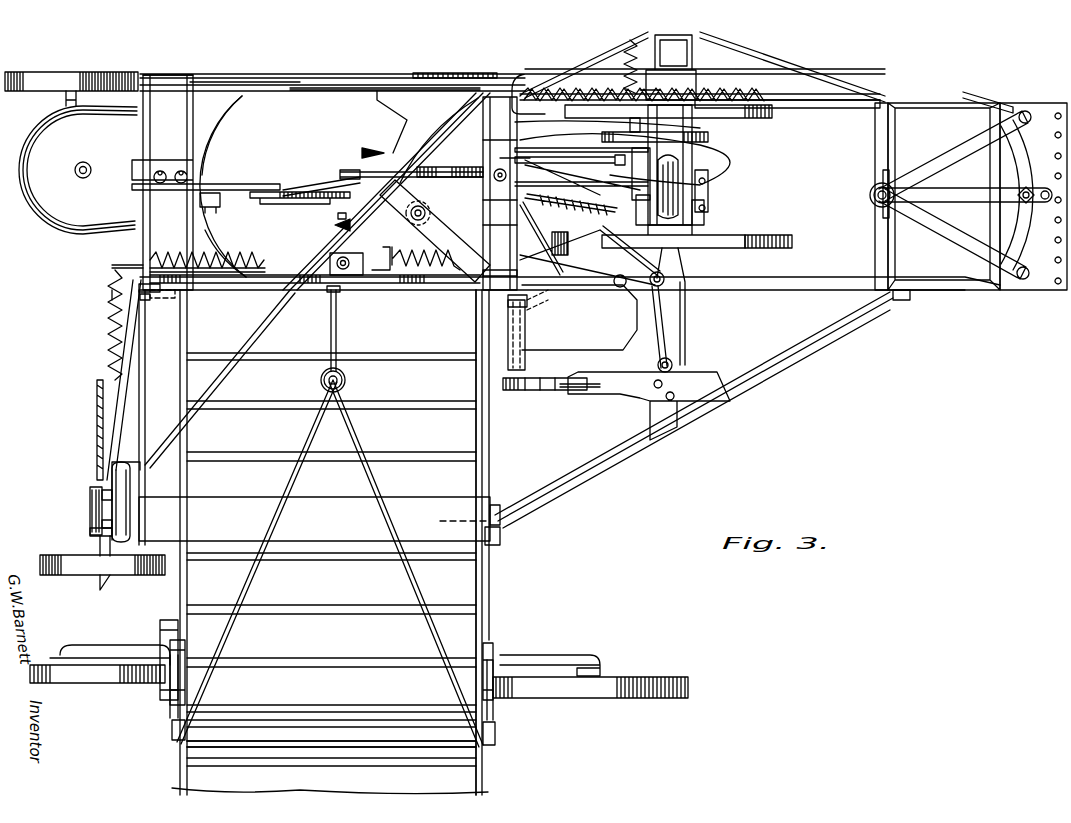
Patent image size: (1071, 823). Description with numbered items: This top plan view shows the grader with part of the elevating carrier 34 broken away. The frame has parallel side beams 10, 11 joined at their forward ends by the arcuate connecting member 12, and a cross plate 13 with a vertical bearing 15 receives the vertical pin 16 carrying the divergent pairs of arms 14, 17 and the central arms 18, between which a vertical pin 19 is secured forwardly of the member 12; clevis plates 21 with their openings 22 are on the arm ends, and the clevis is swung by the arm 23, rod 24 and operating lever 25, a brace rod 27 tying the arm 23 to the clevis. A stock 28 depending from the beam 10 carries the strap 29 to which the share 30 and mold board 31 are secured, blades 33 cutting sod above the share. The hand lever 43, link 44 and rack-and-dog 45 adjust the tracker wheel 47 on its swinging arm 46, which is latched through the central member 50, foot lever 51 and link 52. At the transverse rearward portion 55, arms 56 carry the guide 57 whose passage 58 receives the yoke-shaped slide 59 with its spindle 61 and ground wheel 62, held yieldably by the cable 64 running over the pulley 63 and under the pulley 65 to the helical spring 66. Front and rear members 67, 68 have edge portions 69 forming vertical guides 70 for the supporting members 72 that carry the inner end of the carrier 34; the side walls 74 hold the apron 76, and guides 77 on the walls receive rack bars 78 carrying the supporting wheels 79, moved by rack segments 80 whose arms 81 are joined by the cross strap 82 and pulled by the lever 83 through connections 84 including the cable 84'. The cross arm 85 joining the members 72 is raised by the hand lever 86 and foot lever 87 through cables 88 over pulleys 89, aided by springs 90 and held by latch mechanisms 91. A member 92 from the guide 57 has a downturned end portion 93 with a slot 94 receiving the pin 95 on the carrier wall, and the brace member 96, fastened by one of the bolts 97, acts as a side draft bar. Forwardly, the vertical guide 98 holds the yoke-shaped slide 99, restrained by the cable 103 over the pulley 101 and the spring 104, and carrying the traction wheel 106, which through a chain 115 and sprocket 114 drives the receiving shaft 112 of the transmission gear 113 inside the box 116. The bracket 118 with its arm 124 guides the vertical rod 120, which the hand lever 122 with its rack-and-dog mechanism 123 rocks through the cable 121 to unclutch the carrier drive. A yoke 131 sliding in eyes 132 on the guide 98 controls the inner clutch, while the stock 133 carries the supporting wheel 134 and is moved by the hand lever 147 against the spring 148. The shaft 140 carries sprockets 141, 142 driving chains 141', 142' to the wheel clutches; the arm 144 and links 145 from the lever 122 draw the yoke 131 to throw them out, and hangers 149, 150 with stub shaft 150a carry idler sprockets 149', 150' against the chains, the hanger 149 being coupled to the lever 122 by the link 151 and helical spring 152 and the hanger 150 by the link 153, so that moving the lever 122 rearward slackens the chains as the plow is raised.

The side beam 10 is at (345, 74).
The side beam 11 is at (618, 280).
The arcuate connecting member 12 is at (1005, 222).
The cross plate 13 is at (888, 232).
The forwardly extending arms 14 is at (950, 232).
The vertical bearing 15 is at (883, 212).
The vertical pin 16 is at (870, 192).
The forwardly extending arms 17 is at (945, 152).
The central pair of arms 18 is at (965, 188).
The vertical pin 19 is at (1020, 192).
The clevis plates 21 is at (1020, 290).
The openings 22 is at (1058, 110).
The arm 23 is at (876, 130).
The rearwardly-extending rod 24 is at (795, 78).
The operating lever 25 is at (453, 73).
The brace rod 27 is at (990, 86).
The stock 28 is at (240, 80).
The strap 29 is at (280, 84).
The share 30 is at (438, 130).
The mold board 31 is at (246, 212).
The blades 33 is at (362, 152).
The elevating carrier 34 is at (483, 475).
The hand lever 43 is at (233, 190).
The link 44 is at (173, 191).
The rack-and-dog 45 is at (230, 180).
The arm 46 is at (66, 102).
The tracker wheel 47 is at (86, 72).
The central member 50 is at (290, 190).
The foot lever 51 is at (214, 207).
The link 52 is at (162, 182).
The transverse rearward portion 55 is at (78, 234).
The spaced arms 56 is at (120, 388).
The guide 57 is at (112, 462).
The passage 58 is at (118, 576).
The yoke-shaped slide 59 is at (112, 478).
The horizontal spindle 61 is at (100, 548).
The ground wheel 62 is at (72, 576).
The vertical pulley 63 is at (102, 496).
The cable 64 is at (90, 512).
The pulley 65 is at (90, 532).
The helical spring 66 is at (108, 312).
The front member 67 is at (500, 136).
The rear member 68 is at (168, 112).
The edge portions 69 is at (168, 300).
The vertical guides 70 is at (110, 290).
The vertical supporting members 72 is at (112, 266).
The side walls 74 is at (180, 596).
The apron 76 is at (330, 573).
The vertical guides 77 is at (160, 636).
The rack bars 78 is at (180, 652).
The supporting wheels 79 is at (124, 683).
The rack segments 80 is at (185, 677).
The upwardly extending arms 81 is at (170, 712).
The cross strap 82 is at (290, 738).
The lever 83 is at (300, 204).
The connections 84 is at (330, 563).
The cable 84' is at (352, 328).
The cross arm 85 is at (213, 300).
The hand lever 86 is at (240, 268).
The foot lever 87 is at (416, 255).
The cables 88 is at (330, 275).
The pulleys 89 is at (333, 305).
The springs 90 is at (150, 262).
The latch mechanism 91 is at (250, 300).
The member 92 is at (314, 519).
The forward end portion 93 is at (495, 546).
The longitudinal slot 94 is at (453, 522).
The pin 95 is at (506, 530).
The brace member 96 is at (590, 480).
The bolts 97 is at (900, 302).
The vertical guide 98 is at (704, 215).
The yoke-shaped slide 99 is at (702, 192).
The pulley 101 is at (642, 166).
The cable 103 is at (640, 192).
The spring 104 is at (630, 58).
The traction wheel 106 is at (778, 235).
The receiving shaft 112 is at (512, 390).
The transmission gear 113 is at (548, 300).
The sprocket 114 is at (540, 390).
The chain 115 is at (560, 390).
The box 116 is at (579, 317).
The bracket 118 is at (676, 320).
The vertical rod 120 is at (674, 360).
The cable 121 is at (500, 223).
The hand lever 122 is at (360, 172).
The rack-and-dog mechanism 123 is at (440, 164).
The arm 124 is at (590, 394).
The yoke 131 is at (690, 255).
The eyes 132 is at (625, 250).
The stock 133 is at (750, 122).
The supporting wheel 134 is at (780, 108).
The shaft 140 is at (708, 176).
The sprocket 141 is at (683, 250).
The chain 141' is at (705, 289).
The sprocket 142 is at (657, 140).
The chain 142' is at (636, 129).
The arm 144 is at (560, 185).
The links 145 is at (760, 168).
The hand lever 147 is at (500, 193).
The spring 148 is at (570, 95).
The hanger 149 is at (557, 238).
The idler sprocket 149' is at (500, 266).
The hanger 150 is at (581, 149).
The idler sprocket 150' is at (570, 166).
The stub shaft 150a is at (584, 126).
The link 151 is at (501, 173).
The helical spring 152 is at (500, 205).
The link 153 is at (508, 153).